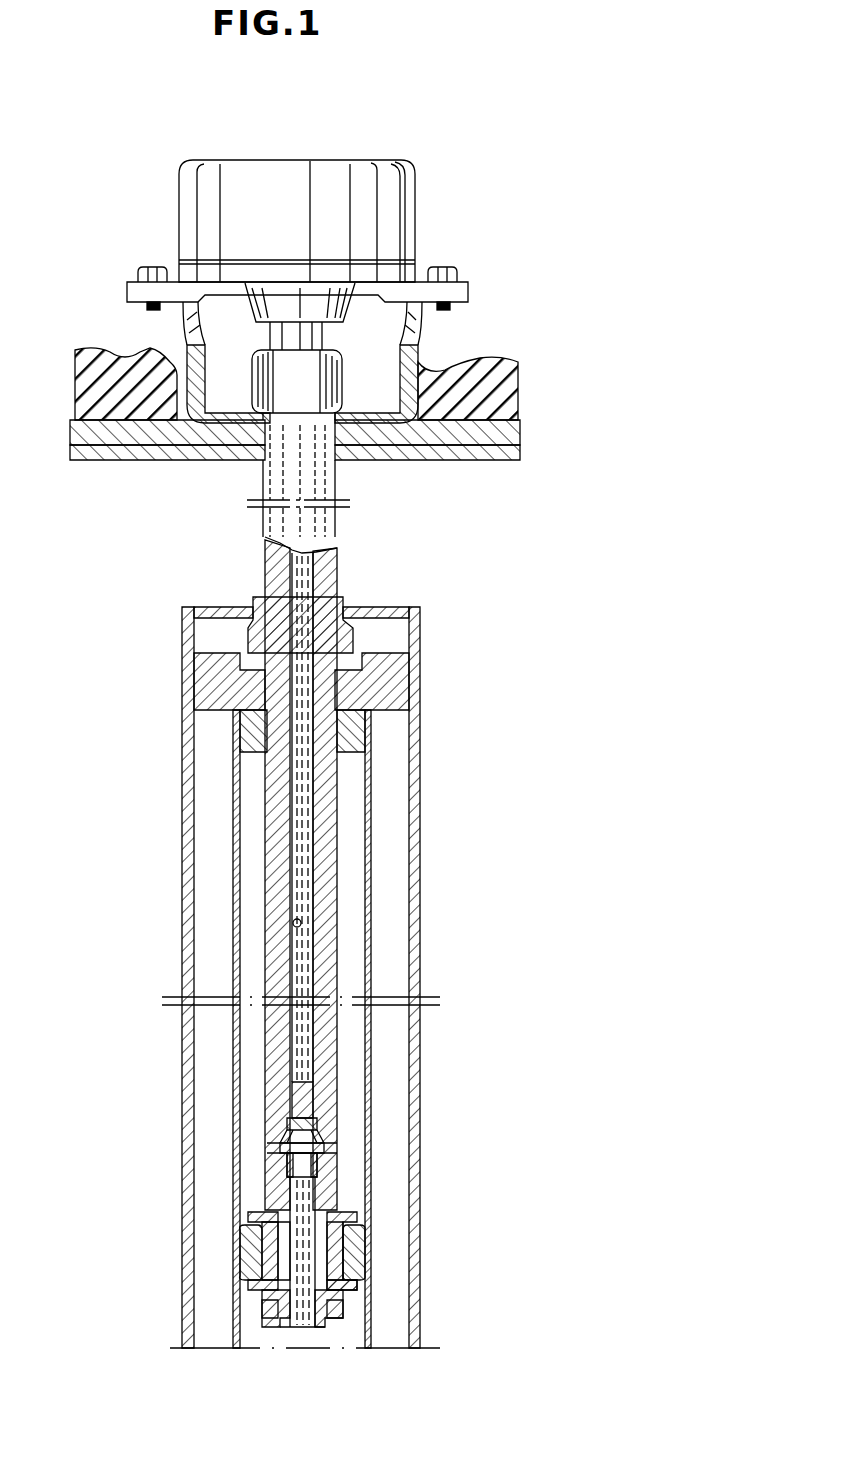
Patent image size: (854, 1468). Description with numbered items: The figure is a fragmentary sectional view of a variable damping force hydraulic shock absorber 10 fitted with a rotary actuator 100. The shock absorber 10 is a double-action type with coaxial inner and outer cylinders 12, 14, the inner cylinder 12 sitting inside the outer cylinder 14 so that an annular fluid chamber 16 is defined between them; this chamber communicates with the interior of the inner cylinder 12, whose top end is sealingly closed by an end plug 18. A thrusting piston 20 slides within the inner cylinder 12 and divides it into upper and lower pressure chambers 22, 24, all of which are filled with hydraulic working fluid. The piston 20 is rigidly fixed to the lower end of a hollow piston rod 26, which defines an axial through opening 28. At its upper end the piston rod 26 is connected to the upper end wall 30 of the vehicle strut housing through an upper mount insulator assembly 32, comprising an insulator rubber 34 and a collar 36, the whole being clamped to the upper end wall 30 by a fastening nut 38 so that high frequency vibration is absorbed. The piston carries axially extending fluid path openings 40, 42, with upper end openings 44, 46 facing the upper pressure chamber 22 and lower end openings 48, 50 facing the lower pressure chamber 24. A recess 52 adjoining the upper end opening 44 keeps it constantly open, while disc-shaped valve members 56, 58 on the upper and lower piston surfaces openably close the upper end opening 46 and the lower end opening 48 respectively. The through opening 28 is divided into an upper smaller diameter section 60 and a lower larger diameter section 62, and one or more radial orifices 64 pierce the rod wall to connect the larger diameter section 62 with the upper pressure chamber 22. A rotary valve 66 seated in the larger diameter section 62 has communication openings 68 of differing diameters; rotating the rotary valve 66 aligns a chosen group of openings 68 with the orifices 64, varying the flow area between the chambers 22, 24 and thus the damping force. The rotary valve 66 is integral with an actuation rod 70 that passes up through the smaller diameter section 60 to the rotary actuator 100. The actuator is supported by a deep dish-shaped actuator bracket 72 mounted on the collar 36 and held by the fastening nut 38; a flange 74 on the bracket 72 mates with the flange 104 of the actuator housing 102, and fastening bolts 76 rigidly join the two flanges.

The variable damping force shock absorber 10 is at (426, 688).
The inner cylinder 12 is at (370, 832).
The outer cylinder 14 is at (420, 907).
The annular fluid chamber 16 is at (395, 1078).
The end plug 18 is at (410, 640).
The thrusting piston 20 is at (367, 1220).
The upper pressure chamber 22 is at (355, 966).
The lower pressure chamber 24 is at (355, 1336).
The piston rod 26 is at (330, 1050).
The through opening 28 is at (292, 918).
The upper end wall 30 is at (417, 458).
The upper mount insulator assembly 32 is at (452, 360).
The insulator rubber 34 is at (498, 382).
The collar 36 is at (352, 452).
The fastening nut 38 is at (263, 380).
The fluid path opening 40 is at (265, 1258).
The fluid path opening 42 is at (352, 1258).
The upper end opening 44 is at (262, 1241).
The upper end opening 46 is at (345, 1232).
The lower end opening 48 is at (262, 1283).
The lower end opening 50 is at (265, 1232).
The recess 52 is at (348, 1302).
The disc-shaped valve member 56 is at (258, 1215).
The disc-shaped valve member 58 is at (258, 1302).
The upper smaller diameter section 60 is at (310, 870).
The lower larger diameter section 62 is at (320, 1168).
The orifices 64 is at (295, 1146).
The rotary valve 66 is at (290, 1125).
The communication openings 68 is at (320, 1142).
The actuation rod 70 is at (302, 780).
The actuator bracket 72 is at (405, 305).
The flange 74 is at (130, 298).
The fastening bolts 76 is at (152, 267).
The rotary actuator 100 is at (430, 170).
The housing 102 is at (188, 192).
The flange 104 is at (137, 290).